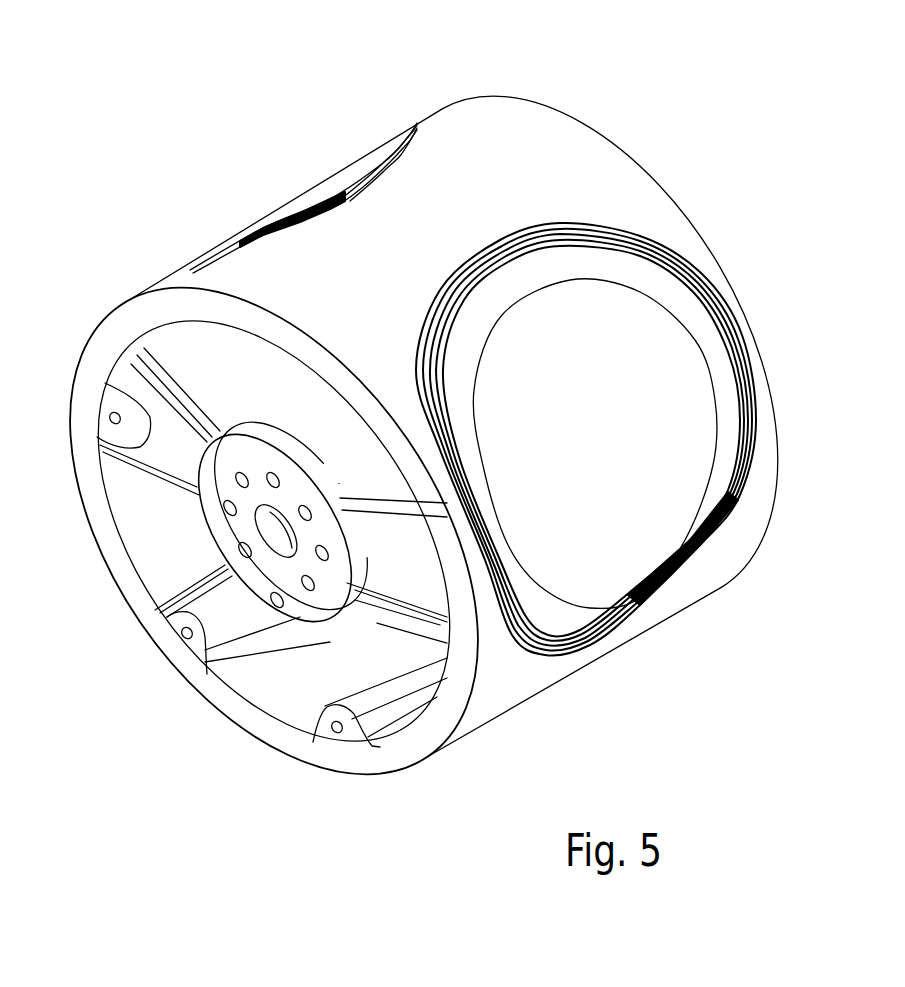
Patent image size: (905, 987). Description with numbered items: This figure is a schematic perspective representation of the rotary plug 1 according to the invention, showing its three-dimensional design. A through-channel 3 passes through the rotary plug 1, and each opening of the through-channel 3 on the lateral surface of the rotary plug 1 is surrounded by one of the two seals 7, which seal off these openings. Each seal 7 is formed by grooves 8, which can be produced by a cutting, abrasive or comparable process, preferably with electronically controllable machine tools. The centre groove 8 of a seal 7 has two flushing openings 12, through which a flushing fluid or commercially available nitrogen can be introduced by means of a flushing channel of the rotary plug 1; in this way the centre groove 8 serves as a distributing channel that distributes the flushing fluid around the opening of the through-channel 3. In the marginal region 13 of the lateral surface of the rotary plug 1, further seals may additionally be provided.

The rotary plug 1 is at (566, 132).
The through-channel 3 is at (590, 388).
The seal 7 is at (186, 256).
The groove 8 is at (405, 130).
The flushing opening 12 is at (760, 357).
The marginal region 13 is at (512, 90).